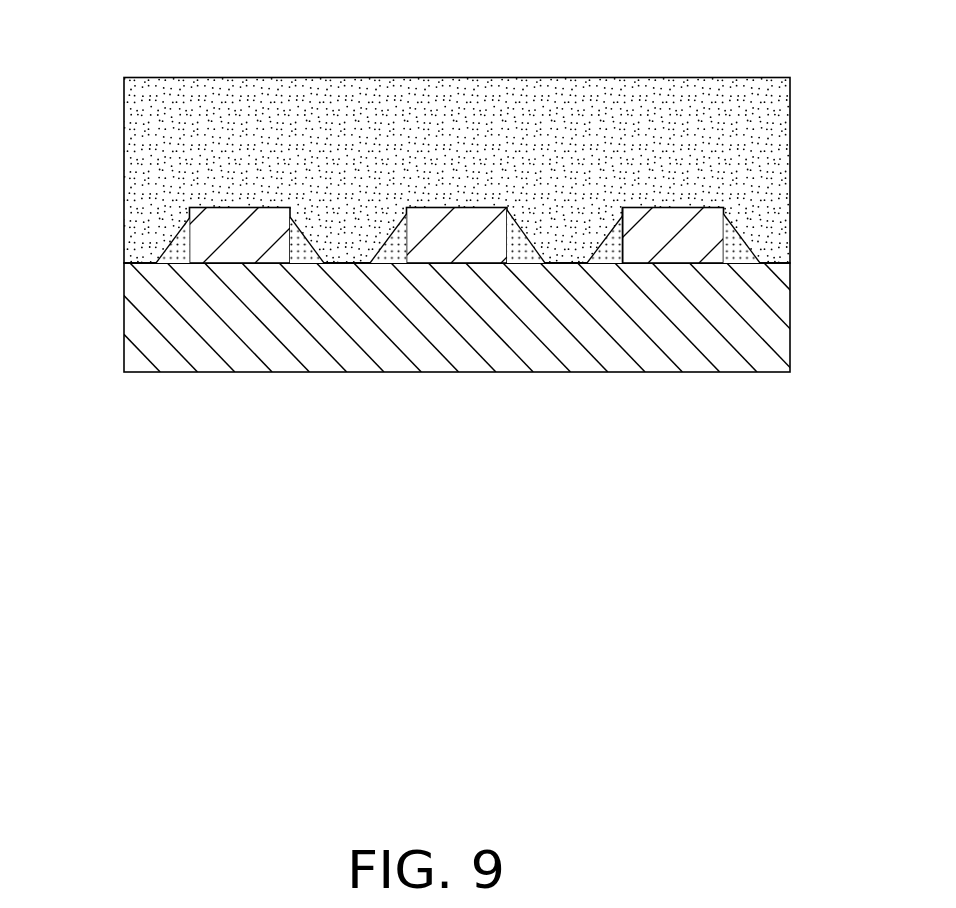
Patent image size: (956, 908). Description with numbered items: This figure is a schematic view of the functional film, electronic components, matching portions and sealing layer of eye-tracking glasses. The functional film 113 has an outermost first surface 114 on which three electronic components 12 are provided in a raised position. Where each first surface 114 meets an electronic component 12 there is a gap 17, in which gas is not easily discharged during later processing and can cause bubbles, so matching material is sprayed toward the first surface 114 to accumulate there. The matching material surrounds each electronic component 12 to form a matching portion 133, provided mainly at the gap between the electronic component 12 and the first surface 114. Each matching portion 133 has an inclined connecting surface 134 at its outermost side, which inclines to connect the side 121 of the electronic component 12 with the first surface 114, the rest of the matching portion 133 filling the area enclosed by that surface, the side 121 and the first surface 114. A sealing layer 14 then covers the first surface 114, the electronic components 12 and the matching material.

The electronic component 12 is at (257, 220).
The sealing layer 14 is at (150, 102).
The gap 17 is at (728, 263).
The functional film 113 is at (453, 362).
The first surface 114 is at (158, 266).
The side 121 is at (628, 223).
The matching portion 133 is at (157, 259).
The inclined connecting surface 134 is at (312, 245).